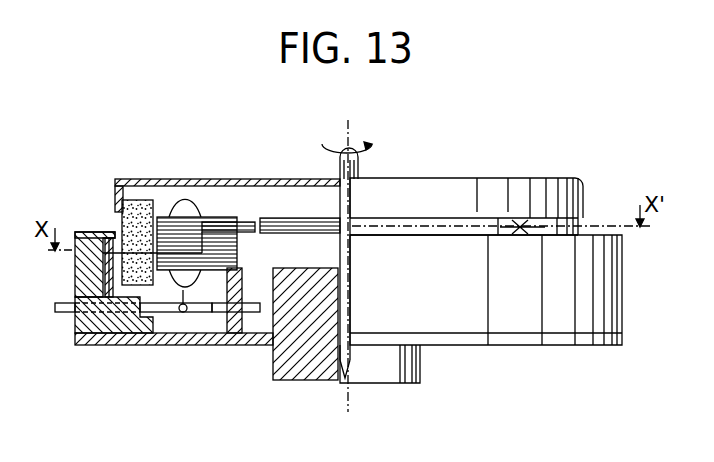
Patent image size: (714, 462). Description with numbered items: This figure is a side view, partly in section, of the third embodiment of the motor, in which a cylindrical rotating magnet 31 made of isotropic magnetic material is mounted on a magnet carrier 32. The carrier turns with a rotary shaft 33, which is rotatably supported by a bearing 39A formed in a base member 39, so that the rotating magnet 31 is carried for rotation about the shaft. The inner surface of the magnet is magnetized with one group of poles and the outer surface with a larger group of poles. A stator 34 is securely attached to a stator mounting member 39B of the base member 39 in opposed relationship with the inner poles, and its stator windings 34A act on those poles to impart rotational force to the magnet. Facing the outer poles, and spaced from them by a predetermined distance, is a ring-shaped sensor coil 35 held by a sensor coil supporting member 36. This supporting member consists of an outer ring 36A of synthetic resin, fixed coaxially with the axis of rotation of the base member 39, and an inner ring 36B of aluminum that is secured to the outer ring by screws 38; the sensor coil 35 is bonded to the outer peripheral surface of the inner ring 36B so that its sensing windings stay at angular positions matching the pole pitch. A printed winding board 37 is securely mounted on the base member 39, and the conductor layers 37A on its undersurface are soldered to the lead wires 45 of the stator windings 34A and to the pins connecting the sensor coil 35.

The rotating magnet 31 is at (137, 205).
The magnet carrier 32 is at (295, 178).
The rotary shaft 33 is at (352, 150).
The stator 34 is at (242, 217).
The stator windings 34A is at (186, 212).
The ring-shaped sensor coil 35 is at (93, 250).
The sensor coil supporting member 36 is at (78, 232).
The outer ring 36A is at (77, 322).
The inner ring 36B is at (108, 238).
The printed winding board 37 is at (168, 313).
The conductor layers 37A is at (205, 313).
The screws 38 is at (520, 222).
The base member 39 is at (255, 346).
The bearing 39A is at (308, 381).
The stator mounting member 39B is at (243, 270).
The lead wires 45 is at (185, 300).